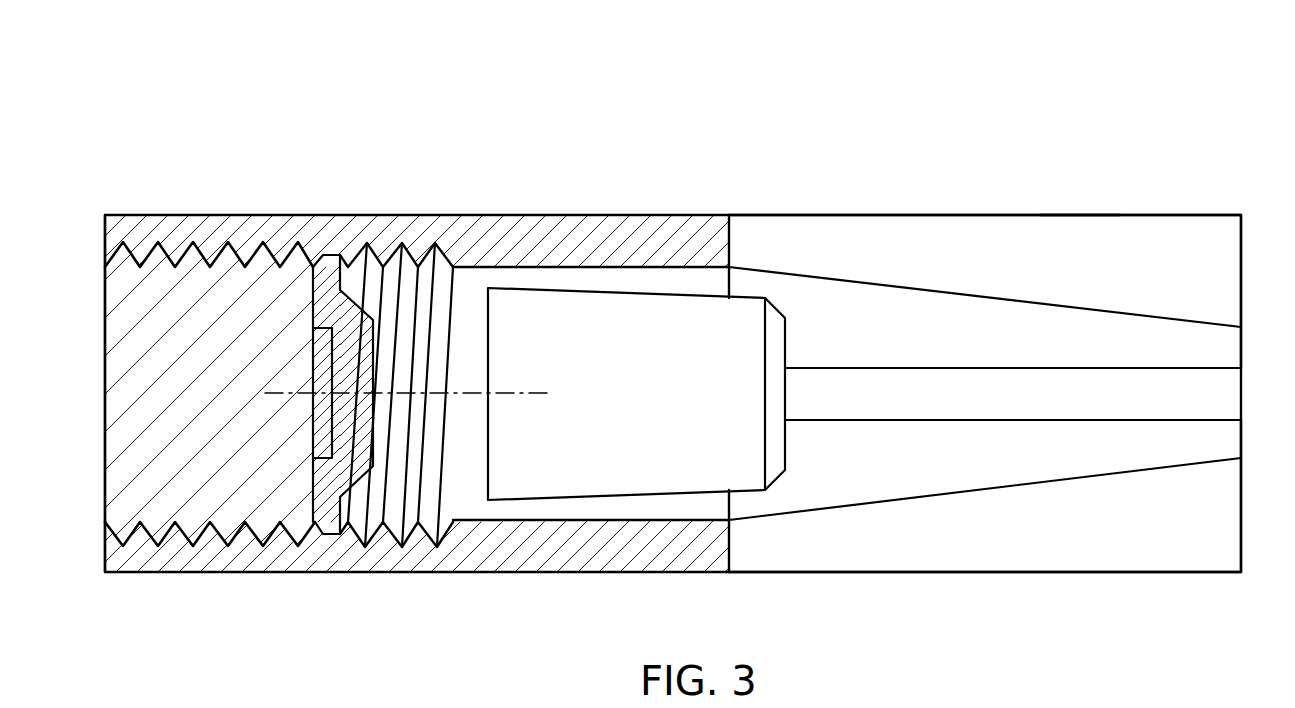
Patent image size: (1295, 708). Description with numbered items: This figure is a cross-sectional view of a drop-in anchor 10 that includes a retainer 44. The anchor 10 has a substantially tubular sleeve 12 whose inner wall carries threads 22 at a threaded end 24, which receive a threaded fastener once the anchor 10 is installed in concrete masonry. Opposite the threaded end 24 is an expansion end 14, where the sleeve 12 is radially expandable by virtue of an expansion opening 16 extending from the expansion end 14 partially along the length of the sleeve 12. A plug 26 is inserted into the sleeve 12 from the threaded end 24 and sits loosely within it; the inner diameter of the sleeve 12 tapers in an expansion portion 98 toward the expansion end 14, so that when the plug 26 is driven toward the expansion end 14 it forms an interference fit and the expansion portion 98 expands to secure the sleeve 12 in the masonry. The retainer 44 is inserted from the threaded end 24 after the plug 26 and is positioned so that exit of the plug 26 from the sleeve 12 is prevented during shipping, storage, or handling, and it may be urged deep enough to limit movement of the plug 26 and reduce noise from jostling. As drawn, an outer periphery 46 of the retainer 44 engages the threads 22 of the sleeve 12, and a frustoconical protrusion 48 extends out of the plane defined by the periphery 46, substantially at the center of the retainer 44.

The drop-in anchor 10 is at (239, 115).
The sleeve 12 is at (615, 572).
The expansion end 14 is at (1241, 260).
The expansion opening 16 is at (1113, 402).
The threads 22 is at (180, 535).
The threaded end 24 is at (106, 420).
The plug 26 is at (647, 408).
The retainer 44 is at (322, 422).
The outer periphery 46 is at (332, 243).
The protrusion 48 is at (360, 450).
The expansion portion 98 is at (1080, 226).